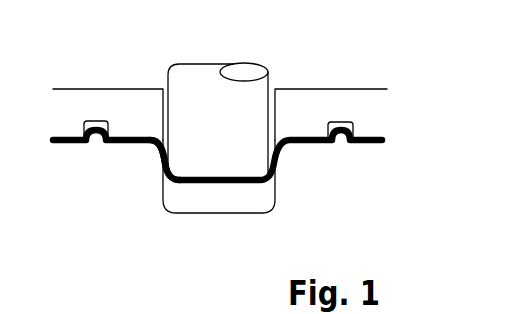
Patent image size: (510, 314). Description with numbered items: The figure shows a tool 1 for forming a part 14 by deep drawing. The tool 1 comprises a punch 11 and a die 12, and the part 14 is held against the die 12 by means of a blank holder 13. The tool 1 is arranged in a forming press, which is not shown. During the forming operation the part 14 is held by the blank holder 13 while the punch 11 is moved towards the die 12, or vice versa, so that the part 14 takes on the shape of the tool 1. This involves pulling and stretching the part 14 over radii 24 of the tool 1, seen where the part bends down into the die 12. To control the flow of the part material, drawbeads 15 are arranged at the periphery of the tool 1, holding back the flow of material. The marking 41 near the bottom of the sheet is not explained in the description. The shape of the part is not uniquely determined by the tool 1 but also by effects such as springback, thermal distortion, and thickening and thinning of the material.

The tool 1 is at (60, 241).
The punch 11 is at (254, 70).
The die 12 is at (377, 185).
The blank holder 13 is at (377, 110).
The part 14 is at (385, 138).
The drawbeads 15 is at (342, 144).
The radii 24 is at (187, 127).
The sheet marking 41 is at (164, 303).